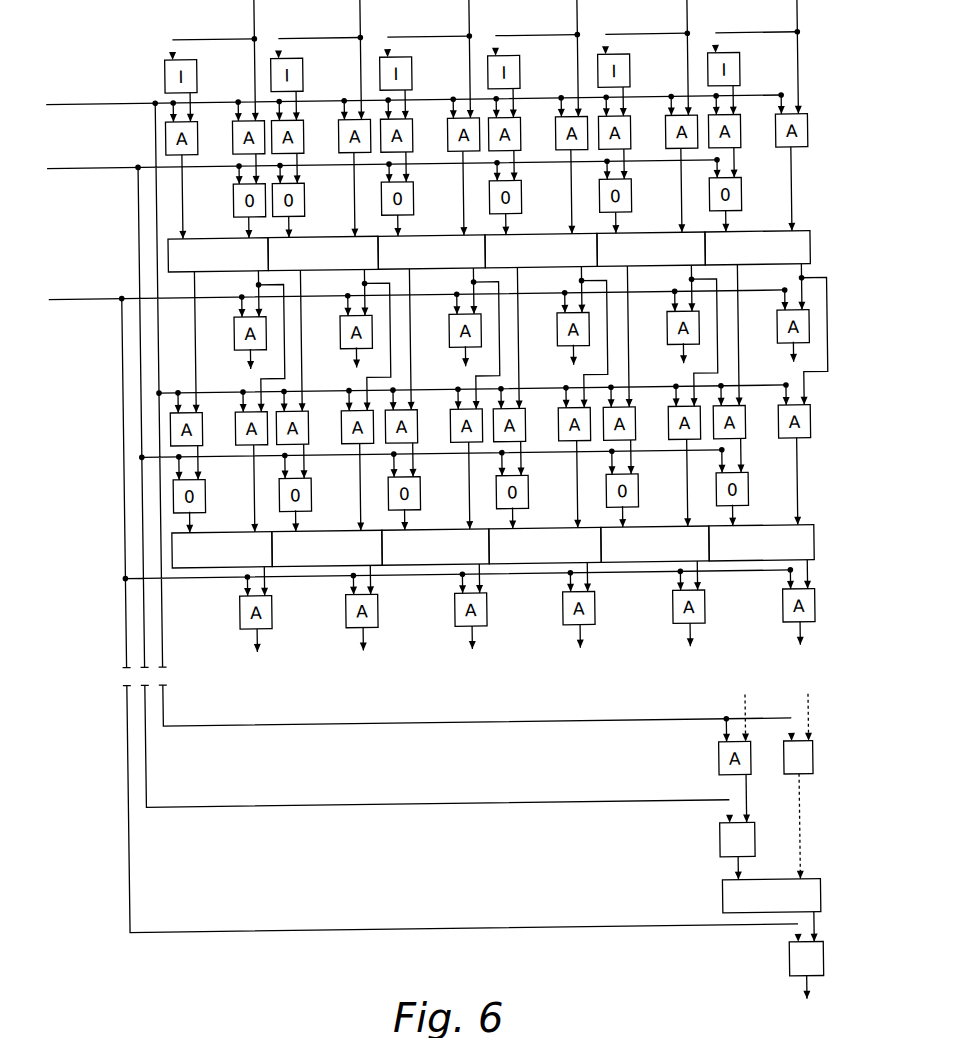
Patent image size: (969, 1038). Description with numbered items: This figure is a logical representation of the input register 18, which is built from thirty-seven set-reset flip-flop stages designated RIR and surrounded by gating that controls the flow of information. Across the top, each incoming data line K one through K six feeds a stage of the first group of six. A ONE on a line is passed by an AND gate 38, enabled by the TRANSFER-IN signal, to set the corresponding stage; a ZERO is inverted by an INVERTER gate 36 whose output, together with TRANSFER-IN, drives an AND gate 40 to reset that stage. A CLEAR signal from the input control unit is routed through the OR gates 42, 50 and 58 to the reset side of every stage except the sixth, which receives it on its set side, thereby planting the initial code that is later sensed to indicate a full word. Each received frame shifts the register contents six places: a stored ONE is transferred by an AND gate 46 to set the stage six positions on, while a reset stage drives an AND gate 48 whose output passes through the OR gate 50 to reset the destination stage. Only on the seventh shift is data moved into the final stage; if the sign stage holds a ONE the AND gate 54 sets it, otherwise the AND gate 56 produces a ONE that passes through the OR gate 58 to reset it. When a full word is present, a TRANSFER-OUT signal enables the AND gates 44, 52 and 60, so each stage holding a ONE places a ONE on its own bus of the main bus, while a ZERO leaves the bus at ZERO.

The input register 18 is at (448, 507).
The INVERTER gate 36 is at (199, 80).
The AND gate 38 is at (234, 135).
The AND gate 40 is at (199, 137).
The OR gate 42 is at (234, 210).
The AND gate 44 is at (233, 342).
The AND gate 46 is at (233, 428).
The AND gate 48 is at (200, 428).
The OR gate 50 is at (201, 498).
The AND gate 52 is at (235, 608).
The AND gate 54 is at (820, 757).
The AND gate 56 is at (712, 765).
The OR gate 58 is at (712, 846).
The AND gate 60 is at (780, 966).